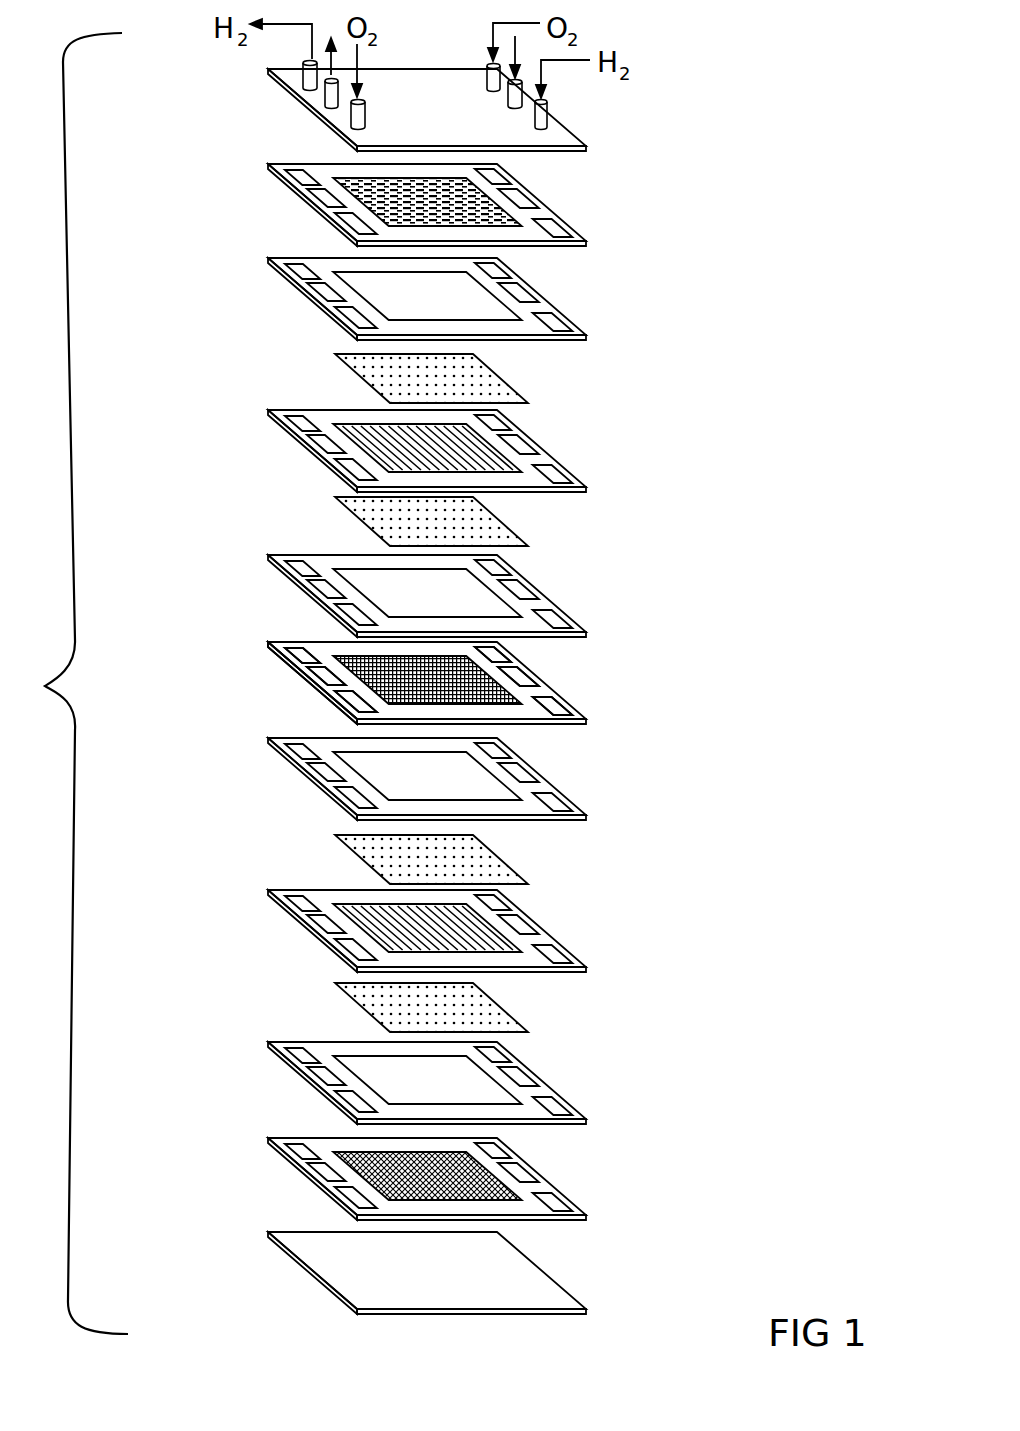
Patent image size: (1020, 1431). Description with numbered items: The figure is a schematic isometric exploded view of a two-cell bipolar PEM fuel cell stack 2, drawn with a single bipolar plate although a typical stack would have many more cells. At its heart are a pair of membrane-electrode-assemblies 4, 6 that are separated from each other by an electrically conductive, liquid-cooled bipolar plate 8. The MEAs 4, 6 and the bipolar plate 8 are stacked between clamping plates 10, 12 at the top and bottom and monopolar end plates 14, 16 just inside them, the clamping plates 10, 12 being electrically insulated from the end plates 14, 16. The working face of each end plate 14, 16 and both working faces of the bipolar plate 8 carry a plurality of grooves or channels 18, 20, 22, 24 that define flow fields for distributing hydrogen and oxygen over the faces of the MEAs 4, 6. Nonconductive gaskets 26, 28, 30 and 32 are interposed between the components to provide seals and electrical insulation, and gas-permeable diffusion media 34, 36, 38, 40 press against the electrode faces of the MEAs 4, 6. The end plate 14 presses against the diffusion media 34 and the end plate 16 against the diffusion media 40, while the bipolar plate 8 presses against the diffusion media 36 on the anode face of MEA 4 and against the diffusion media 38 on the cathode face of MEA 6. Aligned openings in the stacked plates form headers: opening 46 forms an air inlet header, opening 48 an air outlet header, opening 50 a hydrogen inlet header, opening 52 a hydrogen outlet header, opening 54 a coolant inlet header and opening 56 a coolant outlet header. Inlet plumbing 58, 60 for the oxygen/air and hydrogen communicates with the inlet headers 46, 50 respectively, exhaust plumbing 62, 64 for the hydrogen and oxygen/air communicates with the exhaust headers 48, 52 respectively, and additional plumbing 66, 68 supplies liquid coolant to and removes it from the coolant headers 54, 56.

The fuel cell stack 2 is at (74, 683).
The membrane-electrode-assembly 4 is at (290, 440).
The membrane-electrode-assembly 6 is at (568, 921).
The bipolar plate 8 is at (432, 680).
The clamping plate 10 is at (278, 96).
The clamping plate 12 is at (566, 1266).
The monopolar end plate 14 is at (414, 205).
The monopolar end plate 16 is at (479, 1173).
The flow field channels 18 is at (507, 212).
The flow field channels 20 is at (497, 678).
The flow field channels 22 is at (337, 697).
The flow field channels 24 is at (513, 1190).
The nonconductive gasket 26 is at (306, 289).
The nonconductive gasket 28 is at (306, 592).
The nonconductive gasket 30 is at (560, 792).
The nonconductive gasket 32 is at (548, 1085).
The gas-permeable diffusion media 34 is at (365, 367).
The gas-permeable diffusion media 36 is at (368, 513).
The gas-permeable diffusion media 38 is at (487, 862).
The gas-permeable diffusion media 40 is at (483, 1010).
The air inlet header opening 46 is at (505, 652).
The air outlet header opening 48 is at (363, 700).
The hydrogen inlet header opening 50 is at (563, 707).
The hydrogen outlet header opening 52 is at (302, 652).
The coolant inlet header opening 54 is at (535, 686).
The coolant outlet header opening 56 is at (320, 665).
The inlet plumbing 58 is at (487, 78).
The inlet plumbing 60 is at (548, 110).
The exhaust plumbing 62 is at (305, 72).
The exhaust plumbing 64 is at (357, 115).
The coolant plumbing 66 is at (515, 100).
The coolant plumbing 68 is at (333, 97).